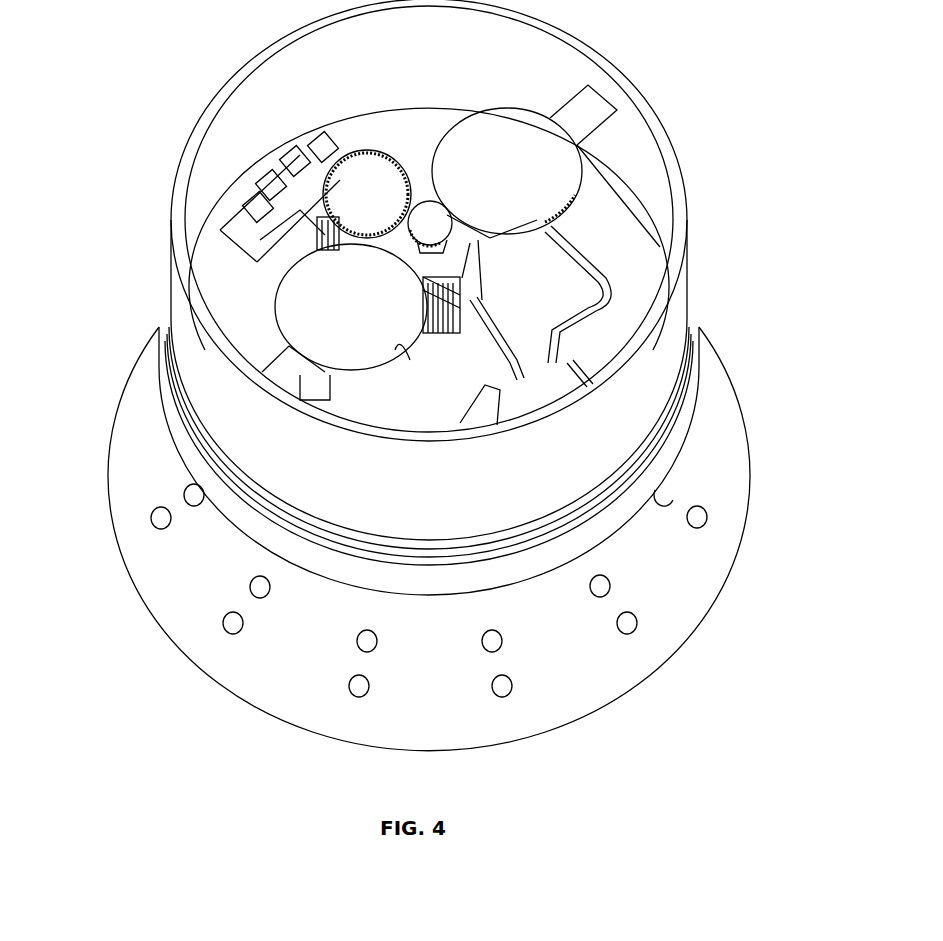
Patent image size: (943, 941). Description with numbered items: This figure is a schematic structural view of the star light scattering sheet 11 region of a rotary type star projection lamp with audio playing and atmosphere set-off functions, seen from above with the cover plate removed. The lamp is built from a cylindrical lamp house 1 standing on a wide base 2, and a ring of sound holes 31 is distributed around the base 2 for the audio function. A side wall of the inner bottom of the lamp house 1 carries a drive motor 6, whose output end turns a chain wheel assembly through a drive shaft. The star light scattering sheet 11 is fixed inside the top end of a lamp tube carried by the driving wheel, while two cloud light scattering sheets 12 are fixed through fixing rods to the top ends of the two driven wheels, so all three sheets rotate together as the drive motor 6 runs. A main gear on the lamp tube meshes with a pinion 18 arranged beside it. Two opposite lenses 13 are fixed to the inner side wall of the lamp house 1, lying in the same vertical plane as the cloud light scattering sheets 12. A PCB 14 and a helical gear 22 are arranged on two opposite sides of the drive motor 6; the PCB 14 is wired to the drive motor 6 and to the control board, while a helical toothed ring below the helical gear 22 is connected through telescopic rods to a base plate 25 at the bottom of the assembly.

The lamp house 1 is at (213, 365).
The base 2 is at (670, 560).
The drive motor 6 is at (460, 307).
The star light scattering sheet 11 is at (428, 223).
The cloud light scattering sheet 12 is at (553, 158).
The lens 13 is at (582, 110).
The PCB 14 is at (530, 383).
The pinion 18 is at (362, 182).
The helical gear 22 is at (288, 212).
The base plate 25 is at (253, 518).
The sound hole 31 is at (357, 685).